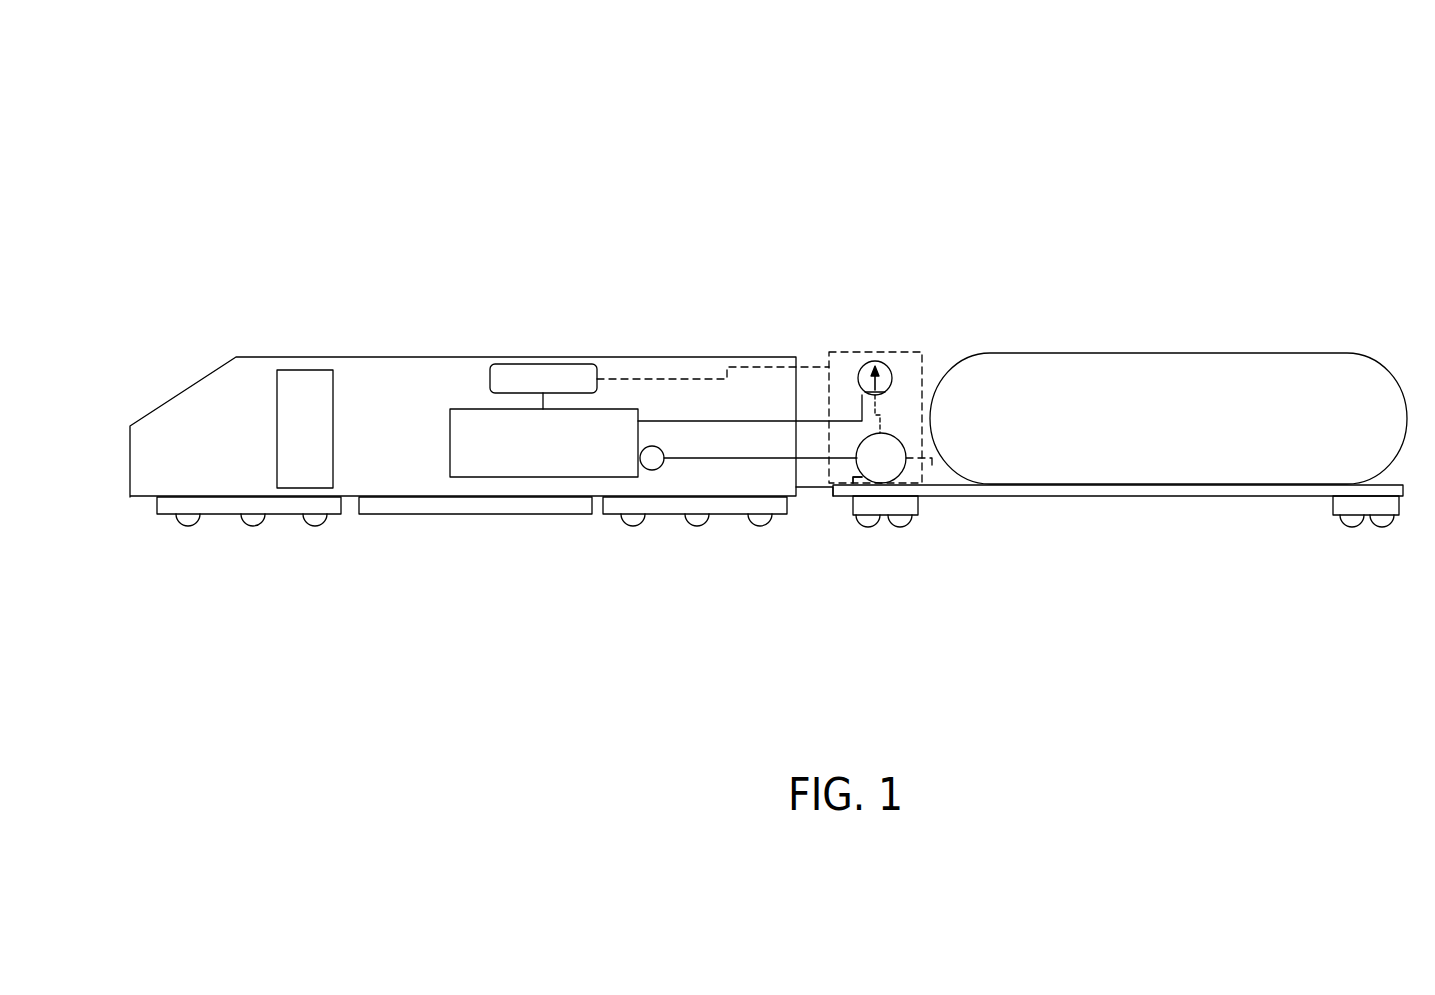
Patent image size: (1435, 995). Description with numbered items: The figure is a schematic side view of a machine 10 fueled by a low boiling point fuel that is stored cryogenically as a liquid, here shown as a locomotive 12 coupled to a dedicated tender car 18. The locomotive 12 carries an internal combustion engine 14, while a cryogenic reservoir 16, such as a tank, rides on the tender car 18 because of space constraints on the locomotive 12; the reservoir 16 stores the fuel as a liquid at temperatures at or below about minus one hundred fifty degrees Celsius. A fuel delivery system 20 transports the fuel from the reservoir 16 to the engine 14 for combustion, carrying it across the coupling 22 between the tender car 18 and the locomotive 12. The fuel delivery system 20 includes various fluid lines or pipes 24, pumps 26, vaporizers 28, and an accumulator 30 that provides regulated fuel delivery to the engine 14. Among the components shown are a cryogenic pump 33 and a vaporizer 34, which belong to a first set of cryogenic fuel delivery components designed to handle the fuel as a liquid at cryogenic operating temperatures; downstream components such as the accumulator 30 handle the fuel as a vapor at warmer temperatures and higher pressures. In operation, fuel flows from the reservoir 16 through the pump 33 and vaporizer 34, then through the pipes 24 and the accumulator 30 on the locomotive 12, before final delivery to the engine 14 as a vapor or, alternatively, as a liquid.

The machine 10 is at (1050, 126).
The locomotive 12 is at (477, 351).
The internal combustion engine 14 is at (523, 463).
The cryogenic reservoir 16 is at (1129, 375).
The tender car 18 is at (1133, 490).
The fuel delivery system 20 is at (810, 279).
The coupling 22 is at (808, 492).
The fluid lines or pipes 24 is at (665, 378).
The pumps 26 is at (661, 451).
The vaporizers 28 is at (887, 432).
The accumulator 30 is at (535, 373).
The cryogenic pump 33 is at (877, 470).
The vaporizer 34 is at (875, 362).